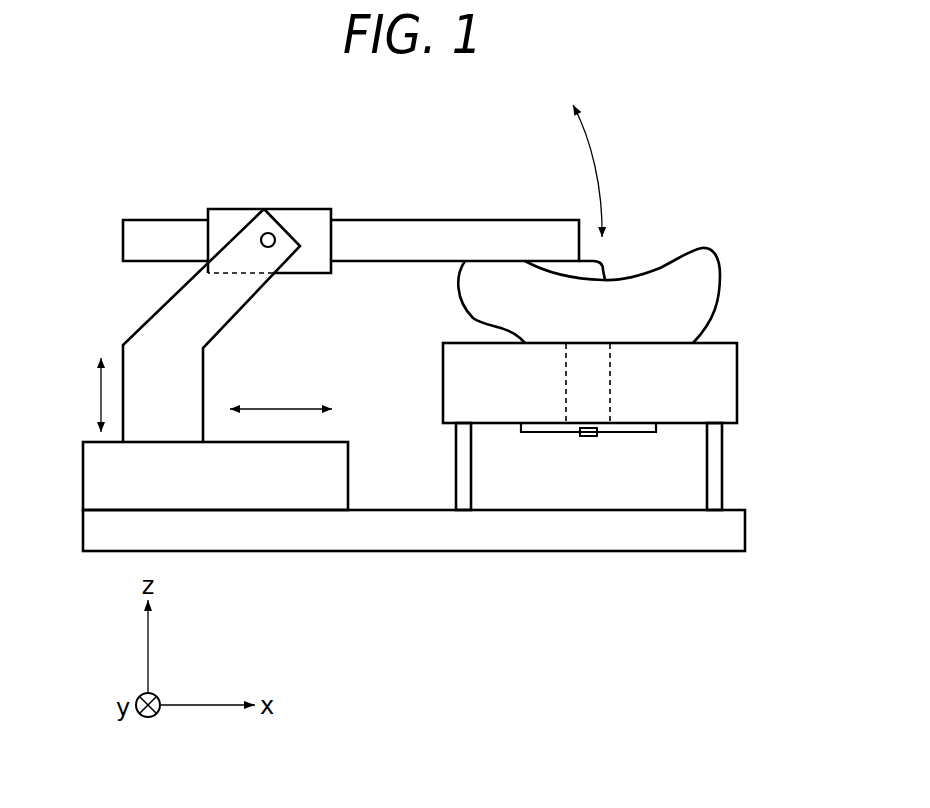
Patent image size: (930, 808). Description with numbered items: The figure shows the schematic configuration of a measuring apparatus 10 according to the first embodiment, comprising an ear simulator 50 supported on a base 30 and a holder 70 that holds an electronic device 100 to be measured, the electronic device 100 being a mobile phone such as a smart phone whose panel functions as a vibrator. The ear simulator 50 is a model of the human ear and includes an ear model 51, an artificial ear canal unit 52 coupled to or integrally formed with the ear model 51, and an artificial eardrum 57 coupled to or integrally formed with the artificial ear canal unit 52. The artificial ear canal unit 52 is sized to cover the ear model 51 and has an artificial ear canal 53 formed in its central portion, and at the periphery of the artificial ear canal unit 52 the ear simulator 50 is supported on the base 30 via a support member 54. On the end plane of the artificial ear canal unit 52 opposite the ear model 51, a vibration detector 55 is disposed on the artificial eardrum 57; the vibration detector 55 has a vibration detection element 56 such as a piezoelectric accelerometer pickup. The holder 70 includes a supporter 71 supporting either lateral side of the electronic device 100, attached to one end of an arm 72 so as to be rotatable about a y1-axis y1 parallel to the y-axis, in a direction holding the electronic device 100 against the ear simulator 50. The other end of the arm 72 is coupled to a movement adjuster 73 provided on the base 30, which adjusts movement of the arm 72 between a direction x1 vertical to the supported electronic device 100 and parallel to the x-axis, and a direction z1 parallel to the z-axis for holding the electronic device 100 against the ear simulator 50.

The measuring apparatus 10 is at (731, 246).
The base 30 is at (380, 535).
The ear simulator 50 is at (749, 358).
The ear model 51 is at (680, 268).
The artificial ear canal unit 52 is at (723, 385).
The artificial ear canal 53 is at (570, 397).
The support member 54 is at (715, 463).
The vibration detector 55 is at (618, 448).
The vibration detection element 56 is at (585, 437).
The artificial eardrum 57 is at (535, 430).
The holder 70 is at (103, 332).
The supporter 71 is at (303, 212).
The arm 72 is at (167, 333).
The movement adjuster 73 is at (115, 477).
The electronic device 100 is at (413, 230).
The y1-axis y1 is at (261, 233).
The direction x-1 x1 is at (281, 395).
The direction z-1 z1 is at (87, 395).